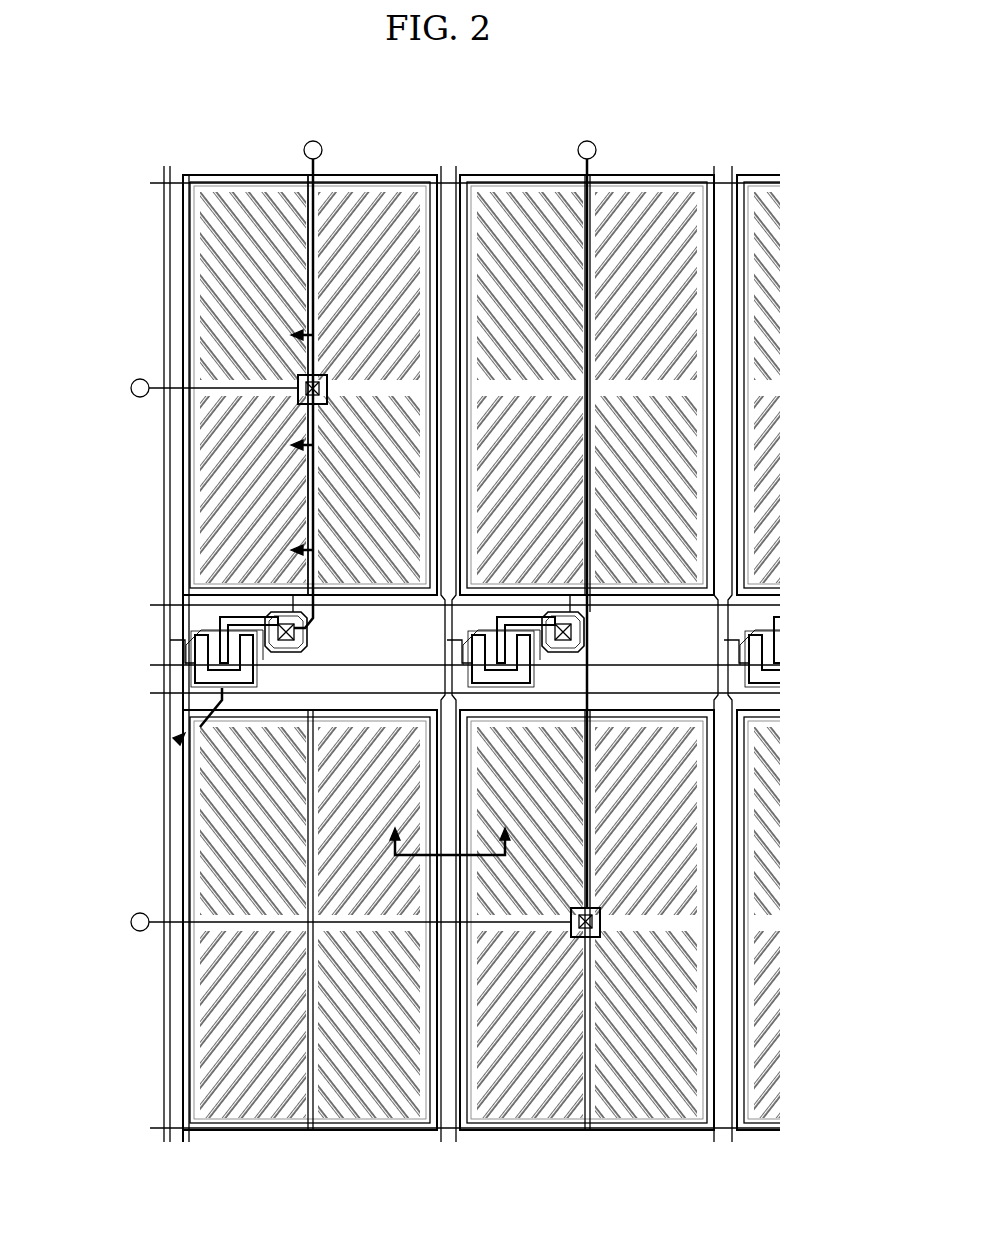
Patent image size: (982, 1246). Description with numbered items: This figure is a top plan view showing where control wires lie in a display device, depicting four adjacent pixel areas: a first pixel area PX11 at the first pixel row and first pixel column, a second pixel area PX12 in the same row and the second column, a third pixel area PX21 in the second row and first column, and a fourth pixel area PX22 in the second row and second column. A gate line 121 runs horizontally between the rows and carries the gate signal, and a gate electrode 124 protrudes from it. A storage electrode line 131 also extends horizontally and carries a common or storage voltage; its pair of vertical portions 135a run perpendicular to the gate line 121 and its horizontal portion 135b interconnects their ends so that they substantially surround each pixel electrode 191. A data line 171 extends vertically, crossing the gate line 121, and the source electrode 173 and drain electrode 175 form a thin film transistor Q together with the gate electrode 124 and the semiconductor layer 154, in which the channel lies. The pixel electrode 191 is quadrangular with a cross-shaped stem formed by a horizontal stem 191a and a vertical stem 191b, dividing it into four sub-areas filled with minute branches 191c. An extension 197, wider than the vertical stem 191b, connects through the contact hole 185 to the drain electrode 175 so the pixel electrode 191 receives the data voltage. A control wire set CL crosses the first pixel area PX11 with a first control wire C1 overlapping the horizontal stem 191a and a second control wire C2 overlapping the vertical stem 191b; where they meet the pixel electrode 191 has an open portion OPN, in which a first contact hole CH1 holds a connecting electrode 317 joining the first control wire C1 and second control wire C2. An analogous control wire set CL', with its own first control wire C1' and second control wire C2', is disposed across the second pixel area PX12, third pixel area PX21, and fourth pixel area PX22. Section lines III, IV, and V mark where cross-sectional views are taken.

The gate line 121 is at (150, 660).
The gate electrode 124 is at (198, 638).
The storage electrode line 131 is at (220, 603).
The vertical portions 135a is at (185, 462).
The horizontal portion 135b is at (283, 172).
The semiconductor layer 154 is at (200, 627).
The data line 171 is at (180, 296).
The source electrode 173 is at (207, 690).
The drain electrode 175 is at (200, 609).
The contact hole 185 is at (300, 650).
The pixel electrode 191 is at (87, 893).
The horizontal stem 191a is at (680, 912).
The vertical stem 191b is at (590, 962).
The minute branches 191c is at (235, 492).
The extension 197 is at (312, 633).
The connecting electrode 317 is at (300, 378).
The first contact hole CH1 is at (300, 400).
The open portion OPN is at (322, 378).
The first control wire C1 is at (200, 388).
The second control wire C2 is at (308, 363).
The first control wire C1' is at (335, 922).
The second control wire C2' is at (587, 503).
The control wire set CL is at (88, 143).
The control wire set CL' is at (89, 209).
The first pixel area PX11 is at (210, 162).
The second pixel area PX12 is at (521, 162).
The third pixel area PX21 is at (249, 1146).
The fourth pixel area PX22 is at (534, 1146).
The thin film transistor Q is at (178, 737).
The section line III is at (217, 676).
The section line IV is at (446, 830).
The section line V is at (291, 392).